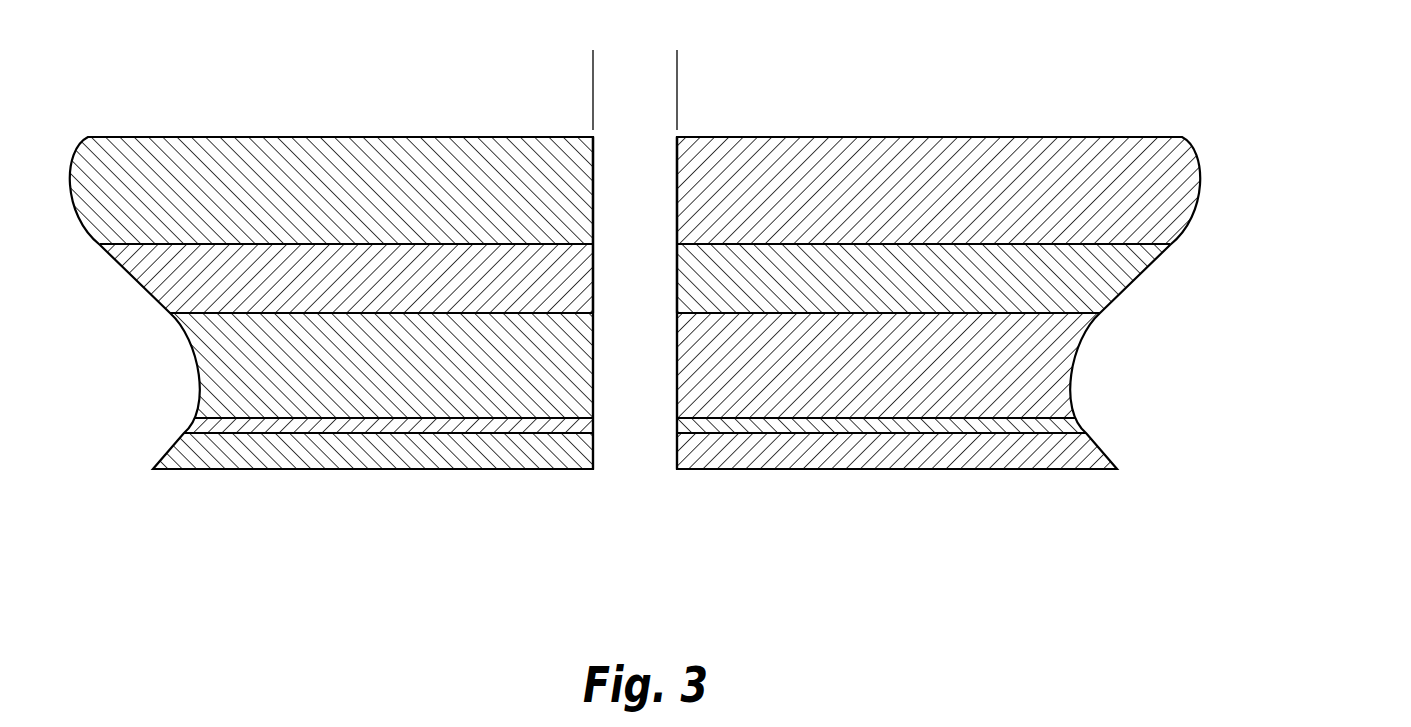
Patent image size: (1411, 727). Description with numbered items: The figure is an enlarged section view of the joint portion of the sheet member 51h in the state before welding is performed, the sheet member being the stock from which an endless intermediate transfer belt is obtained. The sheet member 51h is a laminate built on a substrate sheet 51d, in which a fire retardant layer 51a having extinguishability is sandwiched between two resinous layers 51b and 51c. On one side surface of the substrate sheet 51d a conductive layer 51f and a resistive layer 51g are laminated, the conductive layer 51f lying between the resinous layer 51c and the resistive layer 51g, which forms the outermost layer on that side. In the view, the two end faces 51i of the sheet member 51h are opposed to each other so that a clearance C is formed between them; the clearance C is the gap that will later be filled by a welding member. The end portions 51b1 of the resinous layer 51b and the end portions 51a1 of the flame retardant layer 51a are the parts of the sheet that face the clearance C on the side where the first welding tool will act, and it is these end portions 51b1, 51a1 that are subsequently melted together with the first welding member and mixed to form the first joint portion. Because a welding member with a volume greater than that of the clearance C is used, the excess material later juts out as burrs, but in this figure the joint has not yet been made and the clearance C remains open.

The fire retardant layer 51a is at (1110, 295).
The resinous layer 51b is at (1173, 197).
The resinous layer 51c is at (1055, 378).
The substrate sheet 51d is at (730, 277).
The conductive layer 51f is at (1080, 427).
The resistive layer 51g is at (1020, 455).
The sheet member 51h is at (906, 126).
The end faces 51i is at (676, 399).
The end portions of the resinous layer 51b1 is at (690, 185).
The end portions of the flame retardant layer 51a1 is at (690, 278).
The clearance C is at (676, 77).